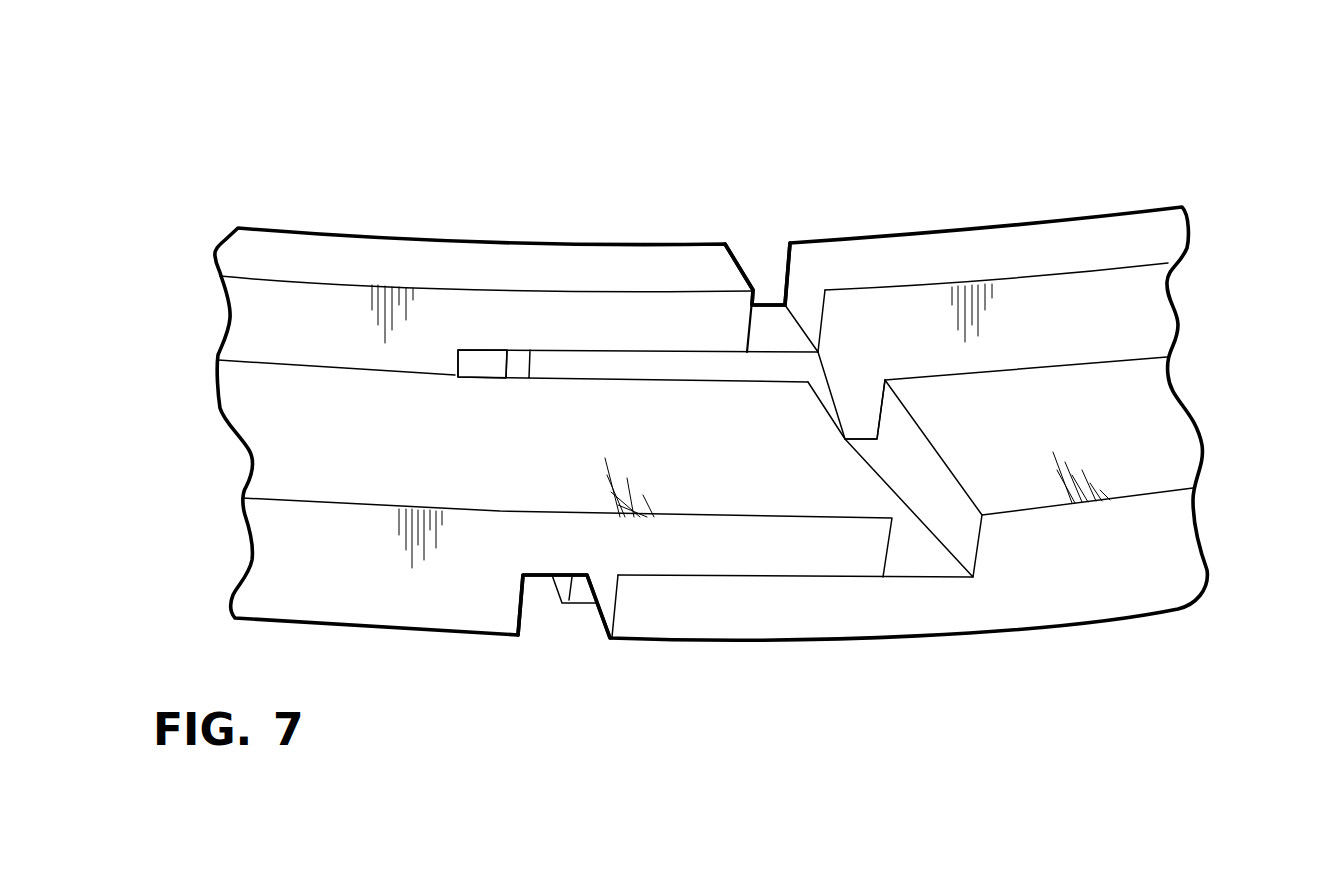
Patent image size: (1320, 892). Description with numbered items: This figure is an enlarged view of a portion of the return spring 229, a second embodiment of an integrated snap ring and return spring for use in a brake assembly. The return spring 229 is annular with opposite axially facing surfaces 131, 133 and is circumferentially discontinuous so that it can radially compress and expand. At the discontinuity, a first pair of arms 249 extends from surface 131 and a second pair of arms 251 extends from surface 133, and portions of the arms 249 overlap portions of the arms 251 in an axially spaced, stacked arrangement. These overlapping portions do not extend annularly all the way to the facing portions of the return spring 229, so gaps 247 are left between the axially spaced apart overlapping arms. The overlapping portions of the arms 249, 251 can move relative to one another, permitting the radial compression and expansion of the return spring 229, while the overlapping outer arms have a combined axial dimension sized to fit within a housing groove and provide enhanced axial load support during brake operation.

The axially facing surface 131 is at (332, 260).
The axially facing surface 133 is at (996, 645).
The return spring 229 is at (1138, 167).
The gap 247 is at (476, 367).
The first pair of arms 249 is at (547, 432).
The second pair of arms 251 is at (633, 367).